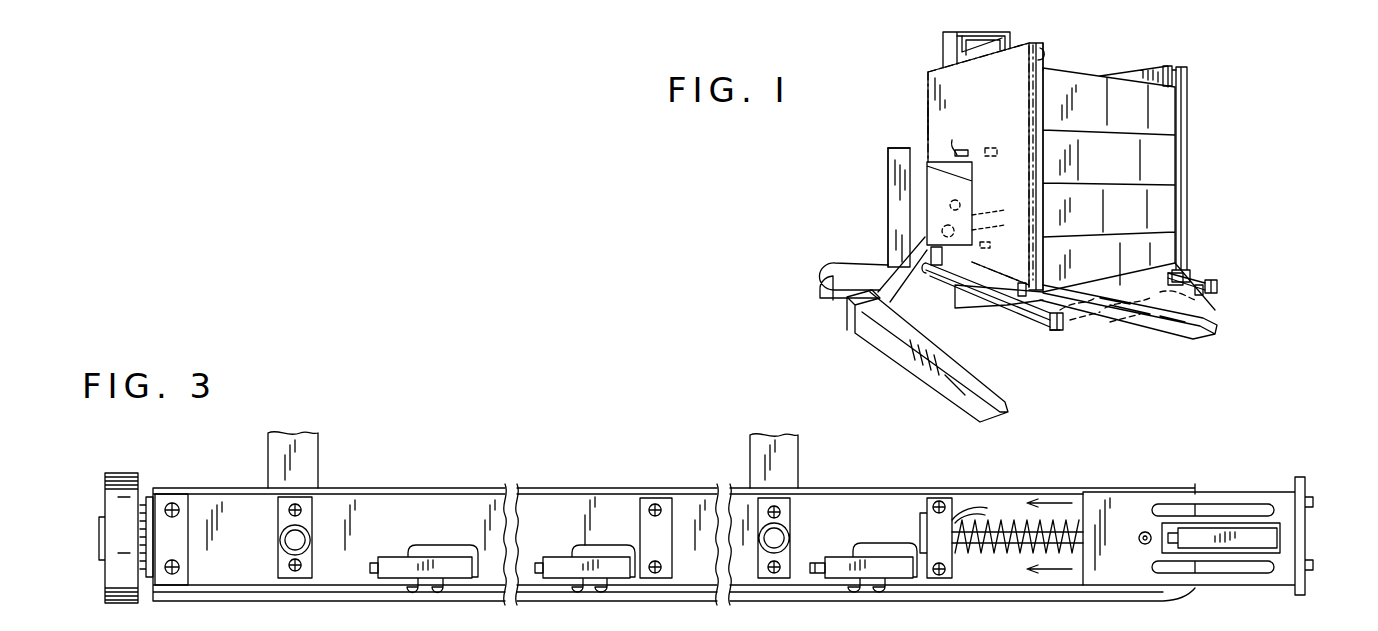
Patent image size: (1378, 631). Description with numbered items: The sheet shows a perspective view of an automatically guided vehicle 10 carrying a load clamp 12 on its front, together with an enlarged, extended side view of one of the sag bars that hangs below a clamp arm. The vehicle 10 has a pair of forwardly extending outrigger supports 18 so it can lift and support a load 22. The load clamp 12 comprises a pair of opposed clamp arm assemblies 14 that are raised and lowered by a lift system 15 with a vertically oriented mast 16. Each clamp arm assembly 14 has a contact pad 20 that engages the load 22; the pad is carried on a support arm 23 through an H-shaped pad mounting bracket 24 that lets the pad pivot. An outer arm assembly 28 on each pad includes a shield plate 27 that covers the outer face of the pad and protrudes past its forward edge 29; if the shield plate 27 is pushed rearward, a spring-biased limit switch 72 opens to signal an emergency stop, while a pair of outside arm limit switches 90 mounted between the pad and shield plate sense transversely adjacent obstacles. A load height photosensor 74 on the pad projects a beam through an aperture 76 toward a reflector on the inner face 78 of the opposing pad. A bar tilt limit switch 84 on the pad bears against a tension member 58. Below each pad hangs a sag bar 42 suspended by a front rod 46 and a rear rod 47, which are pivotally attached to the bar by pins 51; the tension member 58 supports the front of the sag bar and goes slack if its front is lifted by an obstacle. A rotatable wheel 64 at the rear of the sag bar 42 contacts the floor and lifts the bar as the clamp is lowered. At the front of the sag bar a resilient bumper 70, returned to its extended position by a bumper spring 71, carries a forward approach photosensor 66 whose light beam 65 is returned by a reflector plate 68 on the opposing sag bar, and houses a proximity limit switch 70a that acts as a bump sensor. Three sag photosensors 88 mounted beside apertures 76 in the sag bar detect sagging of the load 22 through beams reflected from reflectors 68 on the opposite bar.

In FIG. 1, the automatically guided vehicle 10 is at (888, 162).
In FIG. 1, the load clamp 12 is at (1228, 186).
In FIG. 1, the clamp arm assemblies 14 is at (895, 139).
In FIG. 1, the lift system 15 is at (913, 51).
In FIG. 1, the mast 16 is at (943, 33).
In FIG. 1, the outrigger supports 18 is at (1210, 340).
In FIG. 1, the contact pad 20 is at (928, 118).
In FIG. 1, the load 22 is at (1091, 70).
In FIG. 1, the support arm 23 is at (880, 250).
In FIG. 1, the pad mounting bracket 24 is at (951, 137).
In FIG. 1, the shield plate 27 is at (1220, 136).
In FIG. 1, the outer arm assembly 28 is at (965, 94).
In FIG. 1, the forward edge 29 is at (1047, 52).
In FIG. 1, the sag bar 42 is at (1200, 272).
In FIG. 3, the sag bar 42 is at (453, 488).
In FIG. 3, the front rod 46 is at (750, 452).
In FIG. 3, the rear rod 47 is at (268, 452).
In FIG. 3, the pins 51 is at (776, 540).
In FIG. 1, the tension member 58 is at (1075, 305).
In FIG. 3, the wheel 64 is at (105, 510).
In FIG. 1, the light beam 65 is at (1172, 293).
In FIG. 1, the forward approach photosensor 66 is at (1058, 330).
In FIG. 3, the forward approach photosensor 66 is at (1265, 520).
In FIG. 1, the reflector plate 68 is at (1205, 293).
In FIG. 1, the resilient bumper 70 is at (1218, 285).
In FIG. 3, the resilient bumper 70 is at (1278, 590).
In FIG. 3, the proximity limit switch 70a is at (962, 502).
In FIG. 3, the bumper spring 71 is at (1003, 555).
In FIG. 1, the limit switch 72 is at (986, 156).
In FIG. 1, the load height photosensor 74 is at (962, 150).
In FIG. 3, the aperture 76 is at (886, 543).
In FIG. 1, the inner face 78 is at (1138, 72).
In FIG. 1, the bar tilt limit switch 84 is at (927, 221).
In FIG. 3, the sag photosensors 88 is at (832, 557).
In FIG. 1, the outside arm limit switches 90 is at (910, 190).